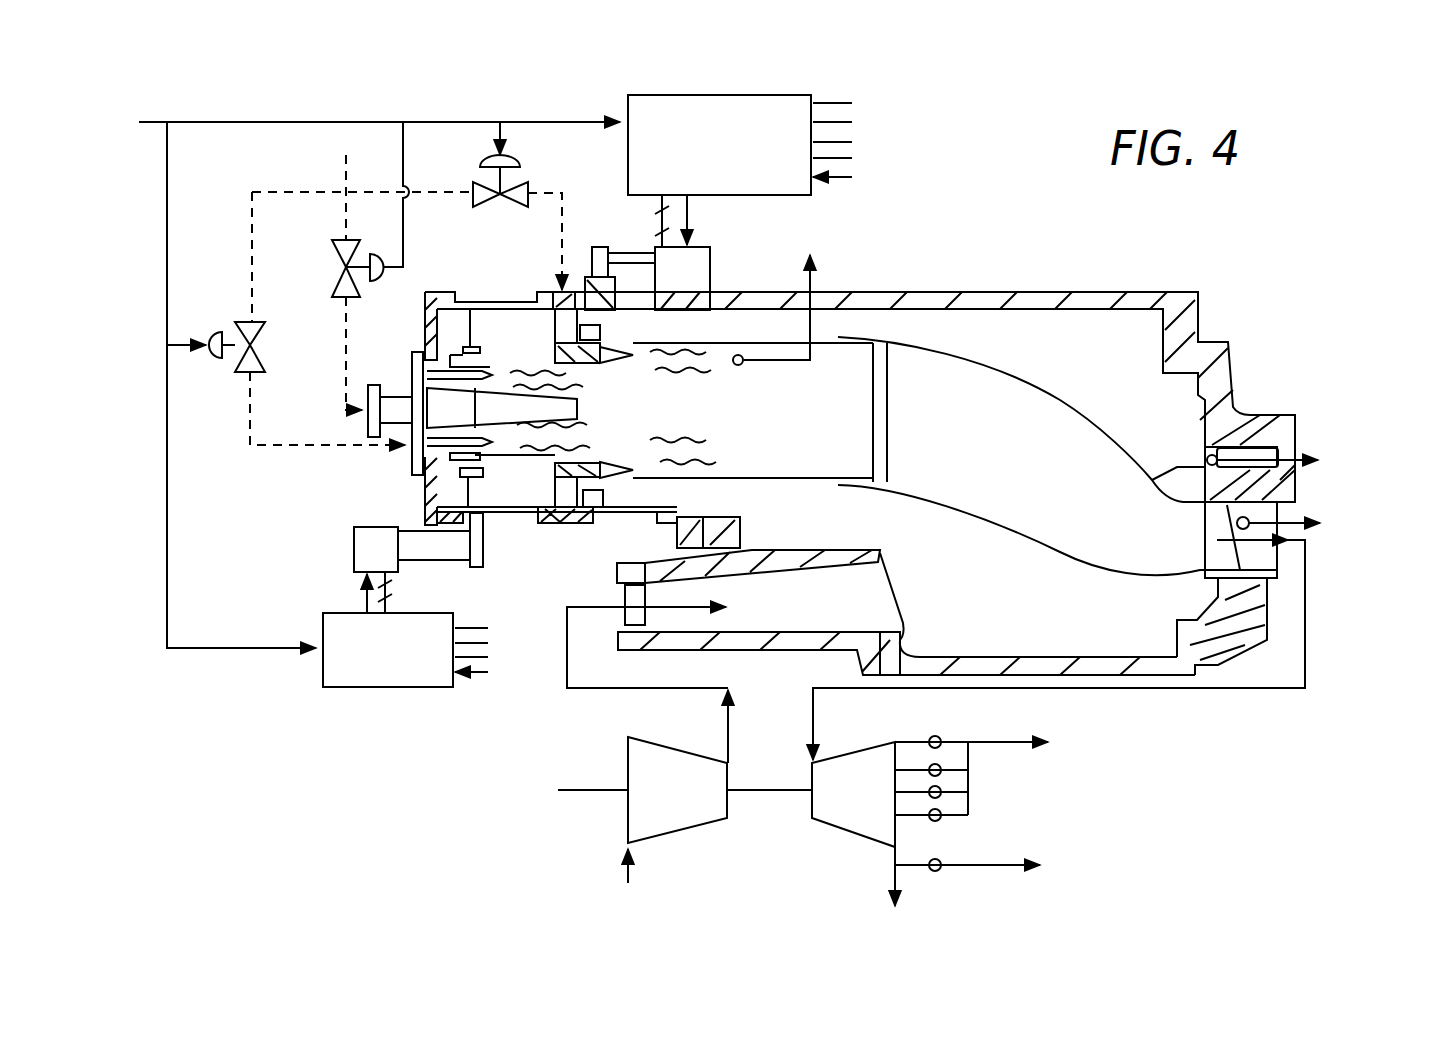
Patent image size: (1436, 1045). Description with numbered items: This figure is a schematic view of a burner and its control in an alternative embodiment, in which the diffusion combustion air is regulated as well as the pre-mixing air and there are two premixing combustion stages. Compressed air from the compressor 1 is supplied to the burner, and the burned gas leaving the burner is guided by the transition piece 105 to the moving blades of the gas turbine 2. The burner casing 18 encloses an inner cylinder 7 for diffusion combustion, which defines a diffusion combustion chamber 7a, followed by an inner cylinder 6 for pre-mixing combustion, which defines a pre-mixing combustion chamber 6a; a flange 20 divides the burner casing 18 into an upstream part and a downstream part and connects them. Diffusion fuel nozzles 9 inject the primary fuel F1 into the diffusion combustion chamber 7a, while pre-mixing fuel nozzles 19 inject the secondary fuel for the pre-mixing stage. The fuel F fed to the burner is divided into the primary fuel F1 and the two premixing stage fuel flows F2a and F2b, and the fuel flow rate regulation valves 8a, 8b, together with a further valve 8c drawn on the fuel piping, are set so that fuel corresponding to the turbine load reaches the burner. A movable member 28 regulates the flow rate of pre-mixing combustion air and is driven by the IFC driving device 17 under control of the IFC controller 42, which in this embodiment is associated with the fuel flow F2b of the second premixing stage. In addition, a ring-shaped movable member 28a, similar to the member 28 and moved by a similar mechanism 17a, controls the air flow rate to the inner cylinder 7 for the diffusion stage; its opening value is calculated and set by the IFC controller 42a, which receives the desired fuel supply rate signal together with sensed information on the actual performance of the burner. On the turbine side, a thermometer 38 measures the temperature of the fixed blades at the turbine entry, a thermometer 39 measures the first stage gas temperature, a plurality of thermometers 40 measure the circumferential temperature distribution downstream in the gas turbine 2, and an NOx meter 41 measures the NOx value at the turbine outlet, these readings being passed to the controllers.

The fuel supply line F is at (245, 122).
The primary fuel F1 is at (348, 318).
The first premixing combustion stage fuel flow F2a is at (252, 447).
The second premixing combustion stage fuel flow F2b is at (557, 252).
The fuel flow rate regulation valve 8a is at (525, 190).
The fuel flow rate regulation valve 8b is at (332, 266).
The fuel control valve 8c is at (258, 339).
The IFC controller 42 is at (740, 171).
The IFC controller 42a is at (405, 629).
The IFC driving device 17 is at (700, 247).
The AC servo motor 17a is at (354, 551).
The burner casing 18 is at (1133, 292).
The inner cylinder for diffusion combustion 7 is at (511, 367).
The diffusion combustion chamber 7a is at (521, 408).
The diffusion fuel nozzles 9 is at (474, 424).
The inner cylinder for pre-mixing combustion 6 is at (785, 483).
The pre-mixing combustion chamber 6a is at (792, 314).
The pre-mixing fuel nozzles 19 is at (590, 364).
The movable member 28 is at (606, 320).
The ring-shaped movable member 28a is at (490, 498).
The flange 20 is at (562, 525).
The transition piece 105 is at (1055, 383).
The thermometer 38 is at (1228, 410).
The thermometer 39 is at (1235, 524).
The compressor 1 is at (685, 761).
The gas turbine 2 is at (853, 824).
The thermometers 40 is at (940, 736).
The NOx meter 41 is at (939, 859).